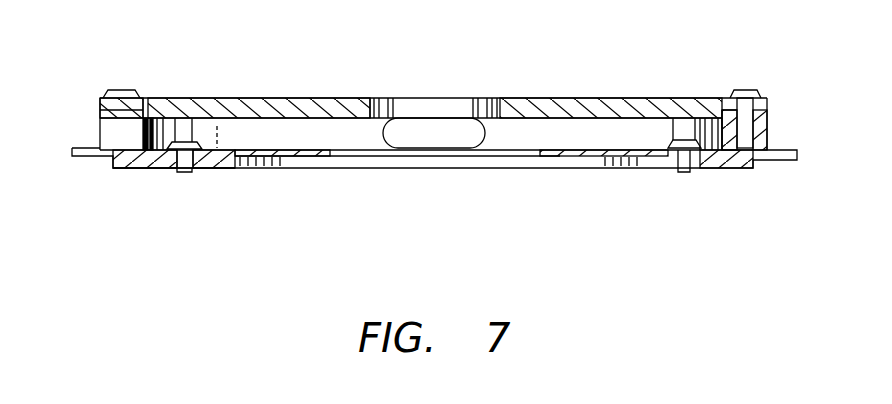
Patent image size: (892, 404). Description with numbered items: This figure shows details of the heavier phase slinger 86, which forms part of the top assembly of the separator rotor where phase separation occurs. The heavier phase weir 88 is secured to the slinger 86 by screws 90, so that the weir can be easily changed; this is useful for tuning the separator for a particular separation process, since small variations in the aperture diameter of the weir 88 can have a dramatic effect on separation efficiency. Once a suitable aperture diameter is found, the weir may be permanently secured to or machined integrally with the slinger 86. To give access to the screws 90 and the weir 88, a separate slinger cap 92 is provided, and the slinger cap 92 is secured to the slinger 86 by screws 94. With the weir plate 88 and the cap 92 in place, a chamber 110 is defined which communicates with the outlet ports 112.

The heavier phase slinger 86 is at (747, 170).
The heavier phase weir 88 is at (218, 170).
The screws 90 is at (182, 175).
The slinger cap 92 is at (657, 98).
The screws 94 is at (120, 90).
The chamber 110 is at (272, 130).
The outlet ports 112 is at (425, 135).